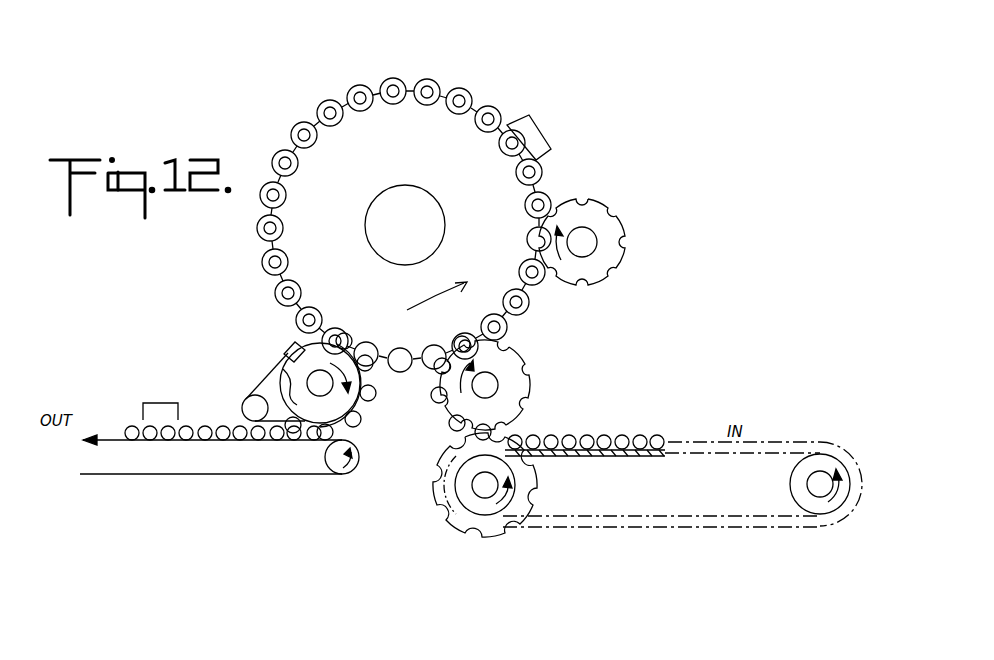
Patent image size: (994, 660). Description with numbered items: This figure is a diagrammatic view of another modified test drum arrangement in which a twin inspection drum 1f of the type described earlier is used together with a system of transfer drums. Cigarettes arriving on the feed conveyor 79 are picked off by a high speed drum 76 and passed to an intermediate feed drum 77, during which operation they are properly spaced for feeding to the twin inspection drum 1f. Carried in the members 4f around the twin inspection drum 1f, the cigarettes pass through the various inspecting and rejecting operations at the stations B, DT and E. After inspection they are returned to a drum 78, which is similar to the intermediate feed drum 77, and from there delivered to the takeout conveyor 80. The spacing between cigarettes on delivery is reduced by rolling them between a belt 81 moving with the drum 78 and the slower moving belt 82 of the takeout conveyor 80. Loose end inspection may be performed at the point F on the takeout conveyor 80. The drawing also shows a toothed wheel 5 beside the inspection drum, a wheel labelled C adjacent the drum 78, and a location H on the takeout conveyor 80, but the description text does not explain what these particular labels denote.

The twin inspection drum 1f is at (417, 158).
The members 4f is at (322, 102).
The star wheel 5 is at (593, 207).
The high speed drum 76 is at (446, 506).
The intermediate feed drum 77 is at (458, 400).
The drum 78 is at (308, 366).
The feed conveyor 79 is at (735, 517).
The takeout conveyor 80 is at (197, 460).
The belt 81 is at (262, 390).
The belt 82 is at (214, 438).
The station E is at (413, 74).
The station DT is at (560, 137).
The station B is at (522, 240).
The discharge wheel C is at (350, 324).
The station H is at (113, 416).
The point F is at (165, 398).